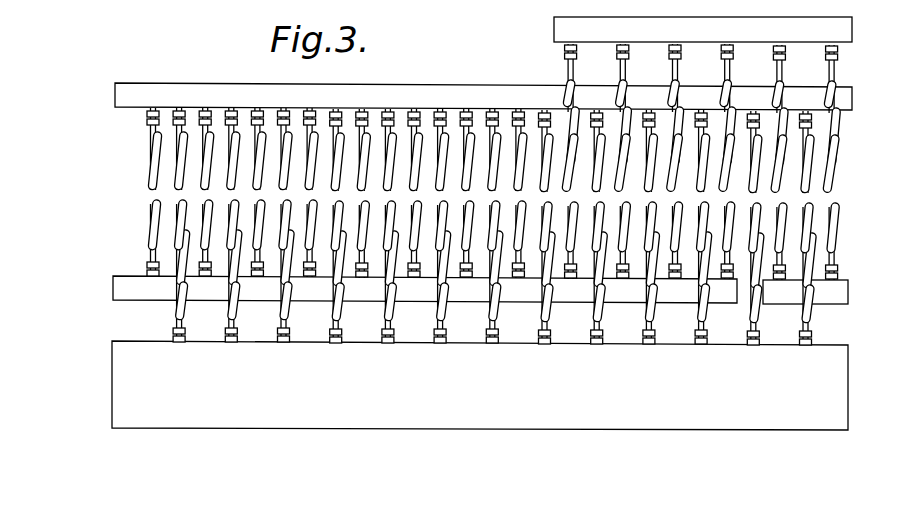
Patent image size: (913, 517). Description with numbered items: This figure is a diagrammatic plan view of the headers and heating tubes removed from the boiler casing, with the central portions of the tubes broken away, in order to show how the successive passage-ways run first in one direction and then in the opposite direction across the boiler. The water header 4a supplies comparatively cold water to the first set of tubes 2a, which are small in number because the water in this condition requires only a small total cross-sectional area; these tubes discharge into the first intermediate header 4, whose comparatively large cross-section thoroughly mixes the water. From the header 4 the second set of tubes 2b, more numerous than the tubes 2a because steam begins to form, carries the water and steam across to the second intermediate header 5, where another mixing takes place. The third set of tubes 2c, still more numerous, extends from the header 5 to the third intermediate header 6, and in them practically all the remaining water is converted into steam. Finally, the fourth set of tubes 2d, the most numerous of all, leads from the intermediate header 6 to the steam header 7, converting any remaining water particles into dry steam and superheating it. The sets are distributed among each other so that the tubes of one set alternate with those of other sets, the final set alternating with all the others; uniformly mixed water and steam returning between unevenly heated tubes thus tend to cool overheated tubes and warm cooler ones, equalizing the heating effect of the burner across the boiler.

The first set of tubes 2a is at (856, 162).
The second set of tubes 2b is at (622, 68).
The third set of tubes 2c is at (258, 156).
The fourth set of tubes 2d is at (284, 226).
The first intermediate header 4 is at (558, 30).
The water header 4a is at (837, 292).
The second intermediate header 5 is at (125, 287).
The third intermediate header 6 is at (118, 88).
The steam header 7 is at (128, 388).